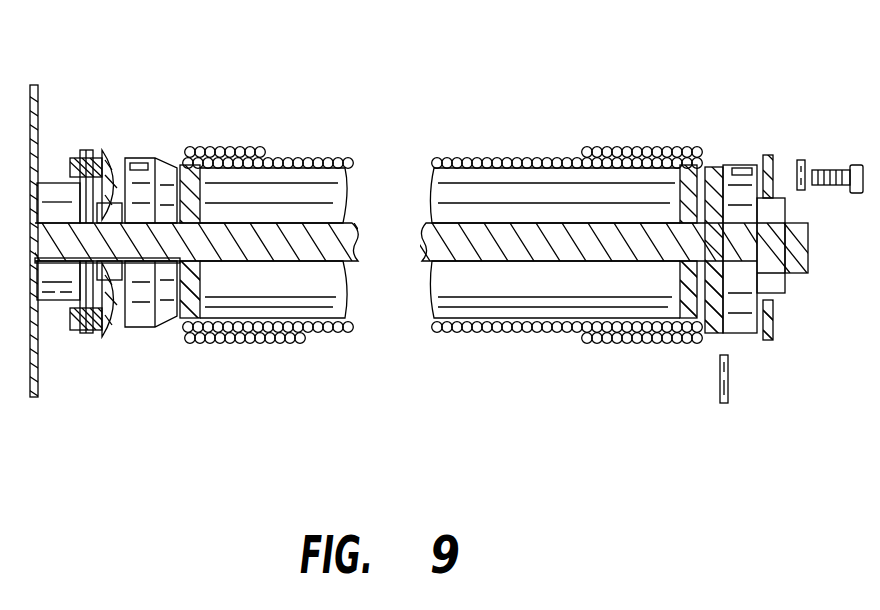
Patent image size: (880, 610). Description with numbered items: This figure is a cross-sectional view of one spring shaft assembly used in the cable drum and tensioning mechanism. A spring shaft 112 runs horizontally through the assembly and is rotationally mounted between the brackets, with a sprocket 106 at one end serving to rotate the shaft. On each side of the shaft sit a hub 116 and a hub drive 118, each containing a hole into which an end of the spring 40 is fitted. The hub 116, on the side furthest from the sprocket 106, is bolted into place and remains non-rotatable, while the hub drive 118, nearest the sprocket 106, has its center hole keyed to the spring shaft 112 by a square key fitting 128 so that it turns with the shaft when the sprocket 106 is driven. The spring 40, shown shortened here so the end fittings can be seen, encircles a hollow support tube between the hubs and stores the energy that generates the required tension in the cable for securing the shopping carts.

The sprocket 106 is at (38, 87).
The spring shaft 112 is at (422, 228).
The hub 116 is at (712, 170).
The hub drive 118 is at (147, 157).
The square key fitting 128 is at (128, 258).
The spring 40 is at (263, 340).